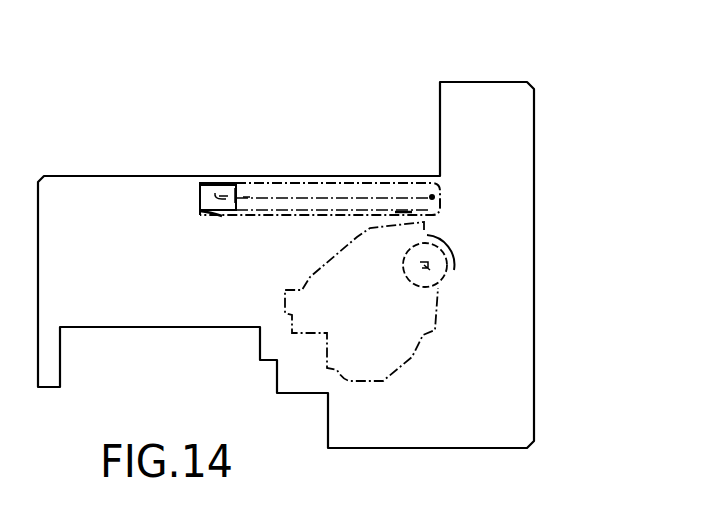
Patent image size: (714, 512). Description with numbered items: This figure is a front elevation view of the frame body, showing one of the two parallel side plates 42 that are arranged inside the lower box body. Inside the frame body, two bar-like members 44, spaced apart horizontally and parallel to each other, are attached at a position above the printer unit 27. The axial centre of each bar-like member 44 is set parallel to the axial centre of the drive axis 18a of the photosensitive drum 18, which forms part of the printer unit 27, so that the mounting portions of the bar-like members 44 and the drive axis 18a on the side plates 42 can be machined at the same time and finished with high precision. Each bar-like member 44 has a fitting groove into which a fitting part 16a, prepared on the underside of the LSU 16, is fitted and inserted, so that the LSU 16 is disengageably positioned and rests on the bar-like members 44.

The side plate 42 is at (534, 122).
The LSU 16 is at (200, 192).
The fitting part 16a is at (400, 213).
The bar-like member 44 is at (403, 212).
The photosensitive drum 18 is at (447, 258).
The drive axis 18a is at (447, 287).
The printer unit 27 is at (410, 352).